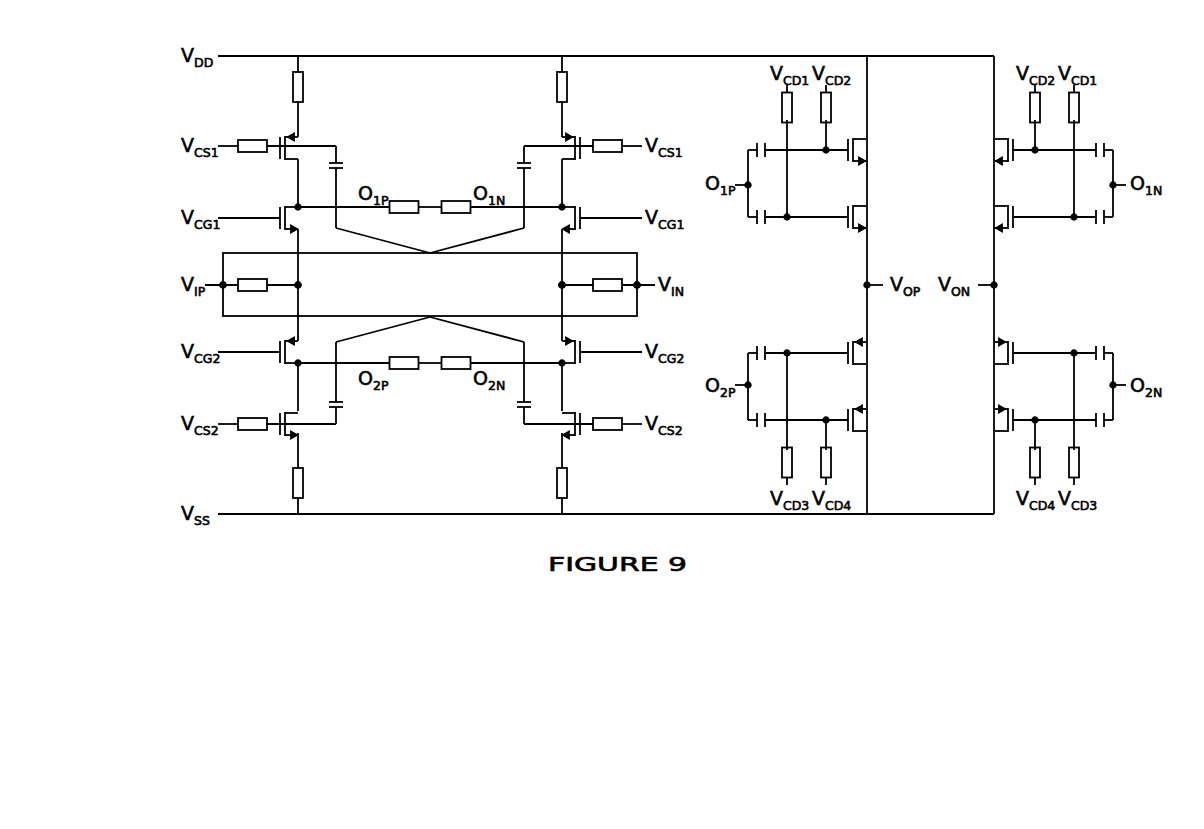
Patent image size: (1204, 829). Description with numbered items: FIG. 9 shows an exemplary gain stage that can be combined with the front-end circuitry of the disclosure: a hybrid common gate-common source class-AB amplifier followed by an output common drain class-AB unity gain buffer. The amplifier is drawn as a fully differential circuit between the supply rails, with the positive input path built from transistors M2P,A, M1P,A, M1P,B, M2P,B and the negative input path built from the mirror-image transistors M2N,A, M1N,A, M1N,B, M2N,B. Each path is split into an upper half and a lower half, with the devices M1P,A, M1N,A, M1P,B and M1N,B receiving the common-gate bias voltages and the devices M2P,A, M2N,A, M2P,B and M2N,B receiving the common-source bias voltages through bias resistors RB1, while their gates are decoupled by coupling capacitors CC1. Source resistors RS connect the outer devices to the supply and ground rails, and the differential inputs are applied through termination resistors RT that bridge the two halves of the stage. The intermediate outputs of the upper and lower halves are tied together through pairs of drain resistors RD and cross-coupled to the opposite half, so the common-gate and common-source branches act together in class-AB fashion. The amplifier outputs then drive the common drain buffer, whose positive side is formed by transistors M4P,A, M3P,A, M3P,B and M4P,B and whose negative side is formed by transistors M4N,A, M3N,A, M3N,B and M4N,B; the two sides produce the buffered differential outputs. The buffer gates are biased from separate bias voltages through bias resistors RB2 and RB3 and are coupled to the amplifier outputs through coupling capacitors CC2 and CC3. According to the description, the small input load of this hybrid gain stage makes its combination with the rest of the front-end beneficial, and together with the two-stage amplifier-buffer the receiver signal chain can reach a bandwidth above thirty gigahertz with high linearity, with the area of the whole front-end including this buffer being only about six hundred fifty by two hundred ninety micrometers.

The source resistor RS is at (430, 286).
The bias resistor RB1 is at (431, 285).
The termination resistor RT is at (430, 273).
The drain resistor RD is at (430, 285).
The coupling capacitor CC1 is at (430, 287).
The bias resistor RB2 is at (931, 285).
The bias resistor RB3 is at (930, 285).
The coupling capacitor CC2 is at (931, 285).
The coupling capacitor CC3 is at (931, 287).
The transistor M2P,A is at (274, 135).
The transistor M1P,A is at (274, 207).
The transistor M1P,B is at (274, 366).
The transistor M2P,B is at (274, 441).
The transistor M2N,A is at (587, 135).
The transistor M1N,A is at (587, 207).
The transistor M1N,B is at (586, 366).
The transistor M2N,B is at (586, 441).
The transistor M4P,A is at (842, 160).
The transistor M3P,A is at (842, 229).
The transistor M3P,B is at (842, 341).
The transistor M4P,B is at (842, 407).
The transistor M4N,A is at (1018, 164).
The transistor M3N,A is at (1018, 230).
The transistor M3N,B is at (1018, 341).
The transistor M4N,B is at (1018, 409).